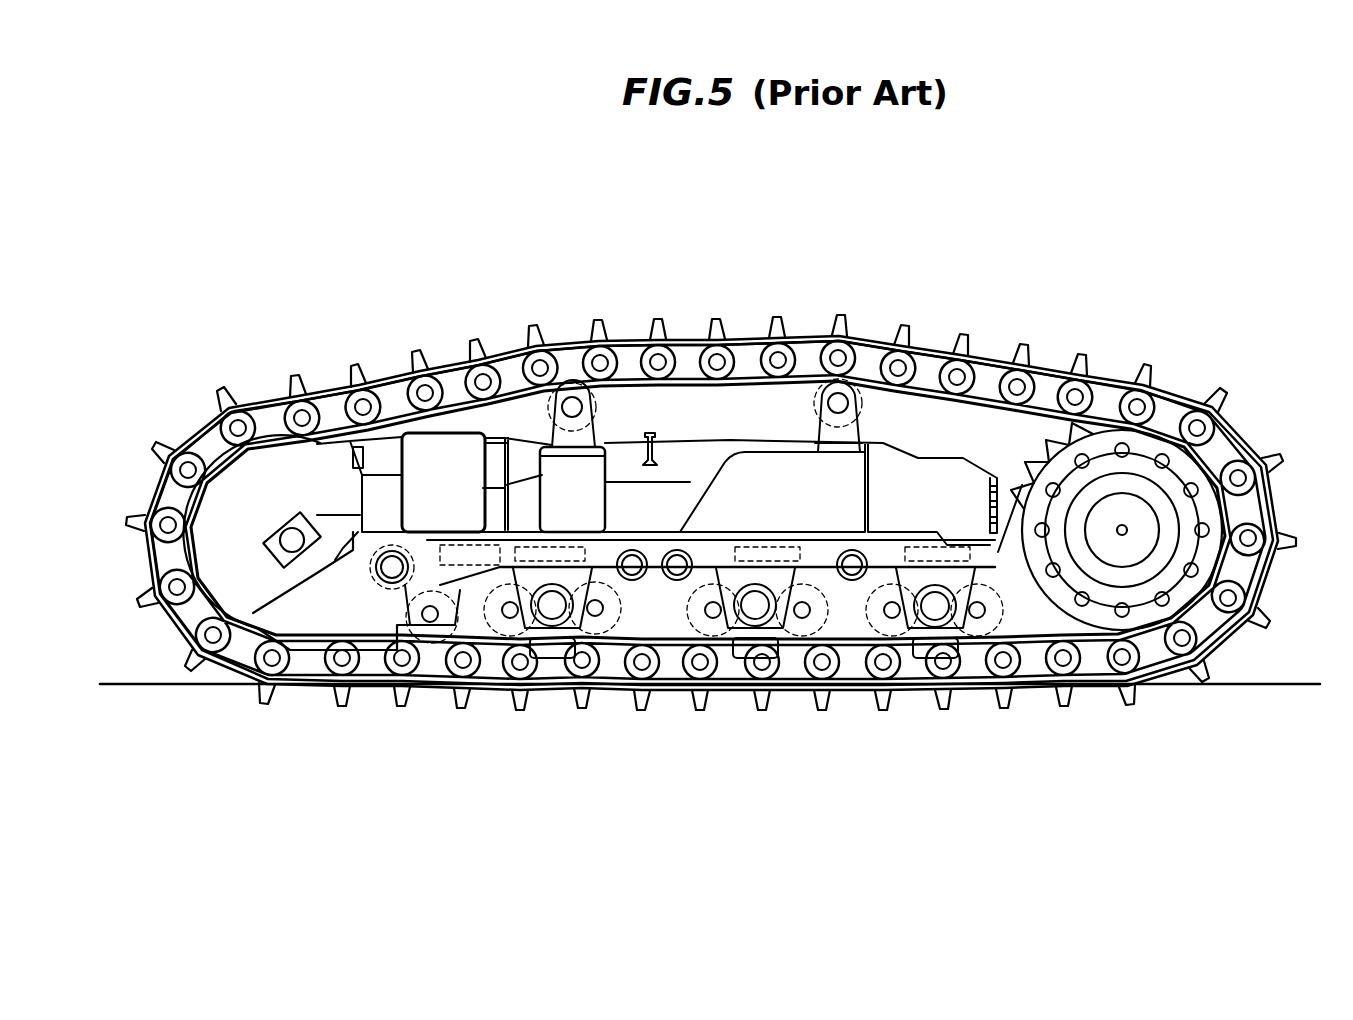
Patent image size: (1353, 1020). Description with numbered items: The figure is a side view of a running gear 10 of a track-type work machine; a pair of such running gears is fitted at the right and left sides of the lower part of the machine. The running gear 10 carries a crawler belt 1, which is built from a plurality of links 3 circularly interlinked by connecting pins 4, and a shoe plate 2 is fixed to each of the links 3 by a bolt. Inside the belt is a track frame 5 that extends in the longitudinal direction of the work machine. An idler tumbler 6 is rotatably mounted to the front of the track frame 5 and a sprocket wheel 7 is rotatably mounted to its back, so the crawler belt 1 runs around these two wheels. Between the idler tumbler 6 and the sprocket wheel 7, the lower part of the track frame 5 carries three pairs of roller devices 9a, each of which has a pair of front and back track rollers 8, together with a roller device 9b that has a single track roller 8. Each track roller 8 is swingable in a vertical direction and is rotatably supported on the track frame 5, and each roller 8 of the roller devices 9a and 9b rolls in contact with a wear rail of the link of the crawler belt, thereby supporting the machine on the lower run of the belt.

The running gear 10 is at (624, 204).
The crawler belt 1 is at (738, 321).
The shoe plate 2 is at (667, 345).
The link 3 is at (800, 355).
The connecting pin 4 is at (607, 361).
The track frame 5 is at (917, 417).
The idler tumbler 6 is at (268, 470).
The sprocket wheel 7 is at (1097, 418).
The track roller 8 is at (437, 635).
The roller device 9a is at (866, 641).
The roller device 9b is at (429, 661).